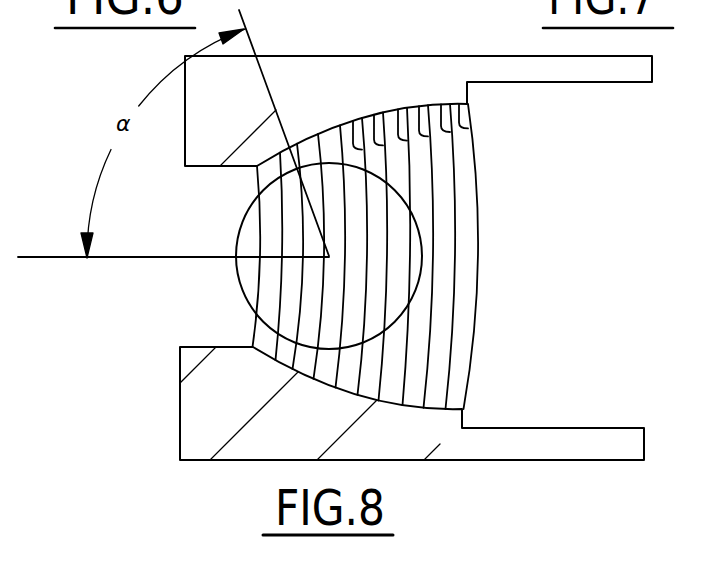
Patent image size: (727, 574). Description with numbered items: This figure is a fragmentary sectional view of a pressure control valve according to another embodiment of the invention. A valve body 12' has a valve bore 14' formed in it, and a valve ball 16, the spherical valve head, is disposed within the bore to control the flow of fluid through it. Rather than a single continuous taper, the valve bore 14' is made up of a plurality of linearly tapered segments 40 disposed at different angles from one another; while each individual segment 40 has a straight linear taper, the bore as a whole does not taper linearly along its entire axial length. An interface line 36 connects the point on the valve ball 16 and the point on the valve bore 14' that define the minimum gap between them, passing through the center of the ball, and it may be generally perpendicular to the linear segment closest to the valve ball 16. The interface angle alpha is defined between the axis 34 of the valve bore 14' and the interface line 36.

The valve body 12' is at (405, 315).
The valve bore 14' is at (275, 256).
The valve ball 16 is at (415, 334).
The axis 34 is at (57, 259).
The interface line 36 is at (243, 15).
The linearly tapered segments 40 is at (350, 152).